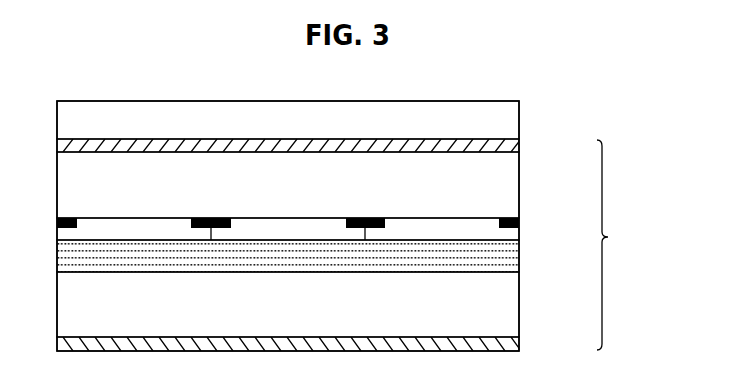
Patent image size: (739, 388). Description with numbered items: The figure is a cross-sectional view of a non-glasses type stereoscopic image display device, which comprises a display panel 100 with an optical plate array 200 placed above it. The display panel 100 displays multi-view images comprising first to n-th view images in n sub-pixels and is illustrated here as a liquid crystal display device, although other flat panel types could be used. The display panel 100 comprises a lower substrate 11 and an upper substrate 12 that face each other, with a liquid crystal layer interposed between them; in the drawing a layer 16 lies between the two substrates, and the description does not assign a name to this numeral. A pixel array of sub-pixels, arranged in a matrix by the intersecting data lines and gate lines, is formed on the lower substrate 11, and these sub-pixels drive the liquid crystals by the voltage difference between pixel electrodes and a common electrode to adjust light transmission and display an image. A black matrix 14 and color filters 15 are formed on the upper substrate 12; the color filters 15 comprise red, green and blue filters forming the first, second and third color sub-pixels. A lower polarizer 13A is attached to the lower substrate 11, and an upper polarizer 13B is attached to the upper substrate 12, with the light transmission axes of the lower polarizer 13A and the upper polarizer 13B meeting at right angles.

The optical plate array 200 is at (510, 118).
The upper polarizer 13B is at (512, 145).
The upper substrate 12 is at (510, 177).
The black matrix 14 is at (518, 224).
The color filters 15 is at (517, 234).
The electrolyte layer 16 is at (512, 255).
The lower substrate 11 is at (510, 302).
The lower polarizer 13A is at (512, 343).
The display panel 100 is at (619, 245).